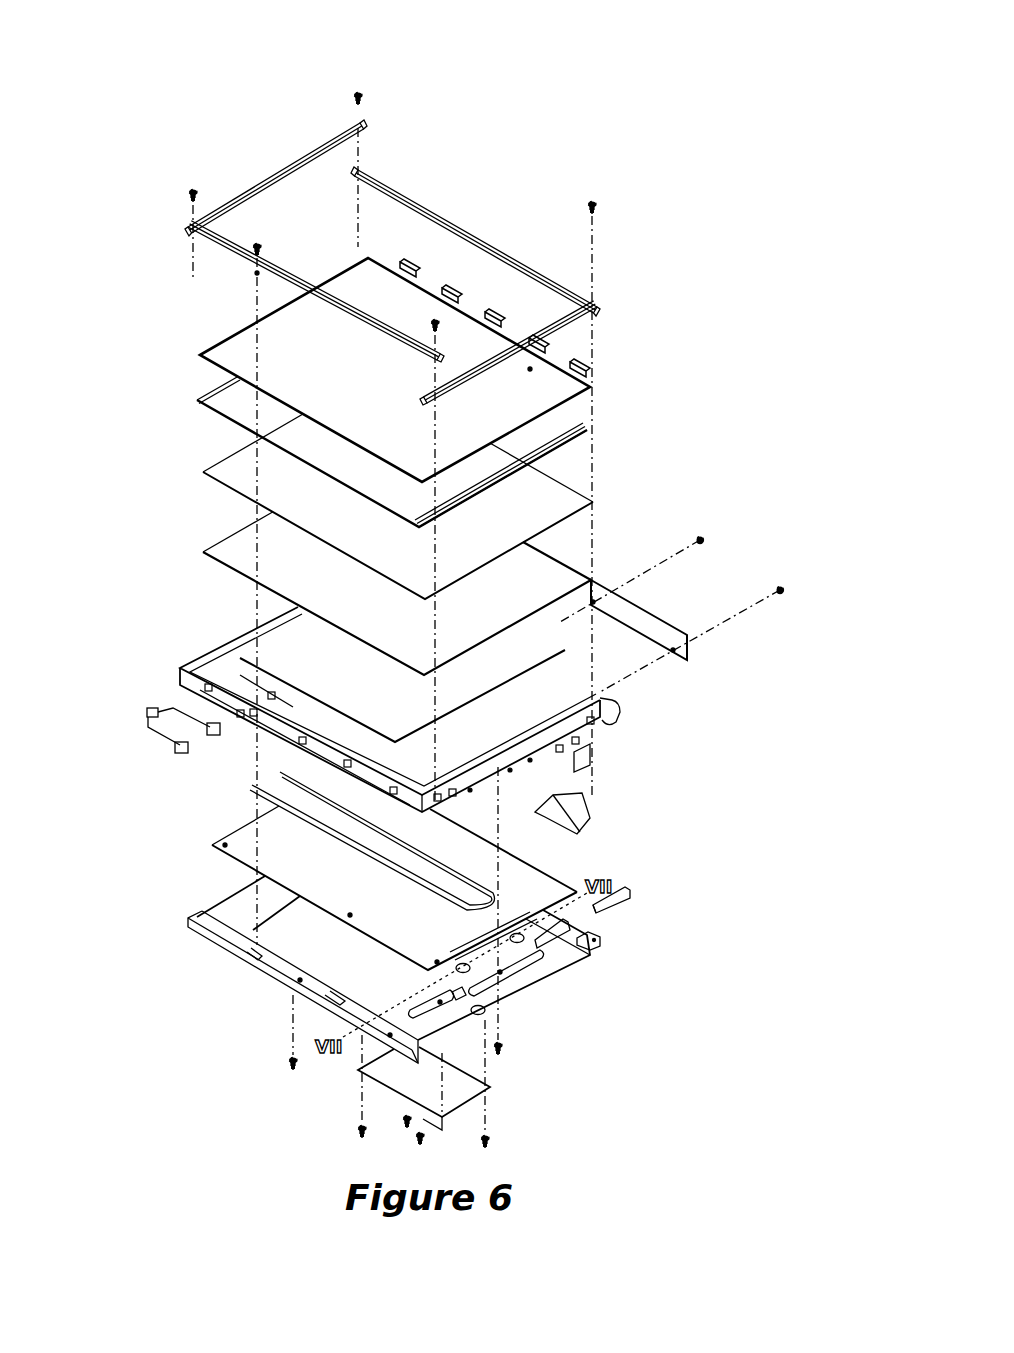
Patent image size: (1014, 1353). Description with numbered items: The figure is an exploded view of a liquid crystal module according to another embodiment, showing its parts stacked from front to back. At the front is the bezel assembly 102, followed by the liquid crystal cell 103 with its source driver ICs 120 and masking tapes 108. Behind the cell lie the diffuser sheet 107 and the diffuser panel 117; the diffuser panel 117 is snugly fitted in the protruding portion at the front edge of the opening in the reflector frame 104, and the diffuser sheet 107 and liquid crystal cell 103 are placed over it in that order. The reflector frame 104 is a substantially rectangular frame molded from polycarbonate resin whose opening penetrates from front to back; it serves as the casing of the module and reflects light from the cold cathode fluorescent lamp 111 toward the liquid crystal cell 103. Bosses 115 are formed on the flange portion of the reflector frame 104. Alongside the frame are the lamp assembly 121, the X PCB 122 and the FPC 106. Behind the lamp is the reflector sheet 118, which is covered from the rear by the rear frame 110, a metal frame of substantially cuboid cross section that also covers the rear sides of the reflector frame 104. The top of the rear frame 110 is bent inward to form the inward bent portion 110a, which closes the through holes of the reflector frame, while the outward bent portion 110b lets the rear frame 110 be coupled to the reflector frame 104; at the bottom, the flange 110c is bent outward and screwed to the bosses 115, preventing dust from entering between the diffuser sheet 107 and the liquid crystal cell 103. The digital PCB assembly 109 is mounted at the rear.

The bezel assembly 102 is at (380, 209).
The liquid crystal cell 103 is at (467, 286).
The source driver ICs 120 is at (509, 259).
The masking tapes 108 is at (86, 345).
The diffuser sheet 107 is at (329, 506).
The diffuser panel 117 is at (330, 589).
The X PCB 122 is at (683, 615).
The reflector frame 104 is at (337, 709).
The lamp assembly 121 is at (131, 706).
The bosses 115 is at (607, 720).
The FPC 106 is at (655, 787).
The cold cathode fluorescent lamp 111 is at (283, 841).
The reflector sheet 118 is at (502, 885).
The rear frame 110 is at (389, 969).
The inward bent portion 110a is at (611, 917).
The outward bent portion 110b is at (622, 955).
The flange 110c is at (301, 987).
The digital PCB assembly 109 is at (522, 1088).